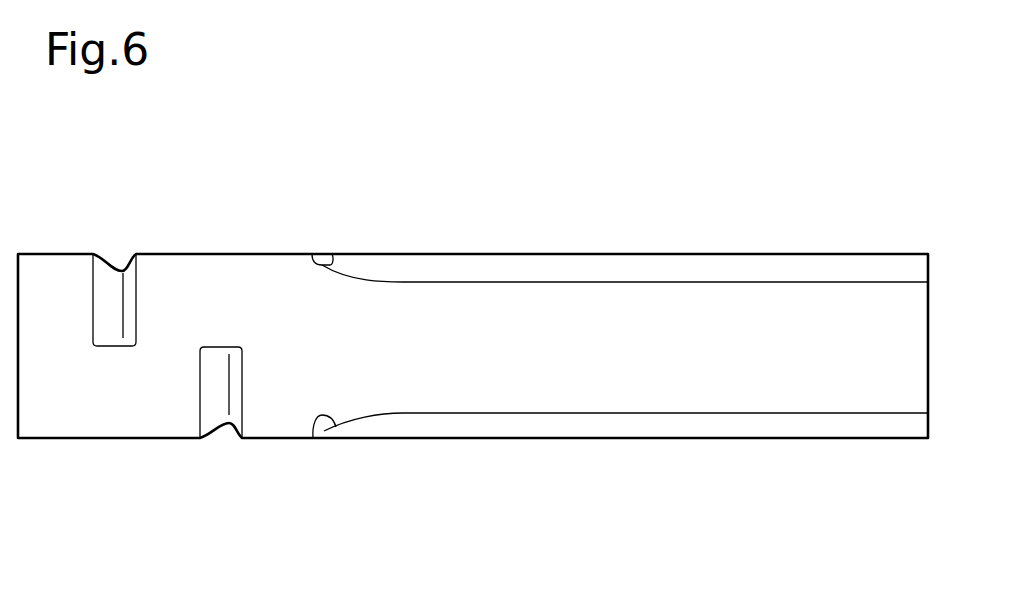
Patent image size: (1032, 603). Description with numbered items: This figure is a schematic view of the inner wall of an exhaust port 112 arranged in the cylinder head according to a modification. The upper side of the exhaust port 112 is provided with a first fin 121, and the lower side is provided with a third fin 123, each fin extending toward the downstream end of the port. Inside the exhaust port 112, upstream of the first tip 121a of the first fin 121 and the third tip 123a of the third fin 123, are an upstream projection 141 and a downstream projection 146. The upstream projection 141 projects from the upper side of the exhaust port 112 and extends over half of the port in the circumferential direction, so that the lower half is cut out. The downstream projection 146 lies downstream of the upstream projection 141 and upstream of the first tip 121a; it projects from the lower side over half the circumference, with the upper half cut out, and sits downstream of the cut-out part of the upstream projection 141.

The exhaust port 112 is at (584, 242).
The upstream projection 141 is at (110, 252).
The downstream projection 146 is at (229, 424).
The first fin 121 is at (420, 268).
The first tip 121a is at (311, 254).
The third fin 123 is at (423, 425).
The third tip 123a is at (313, 438).